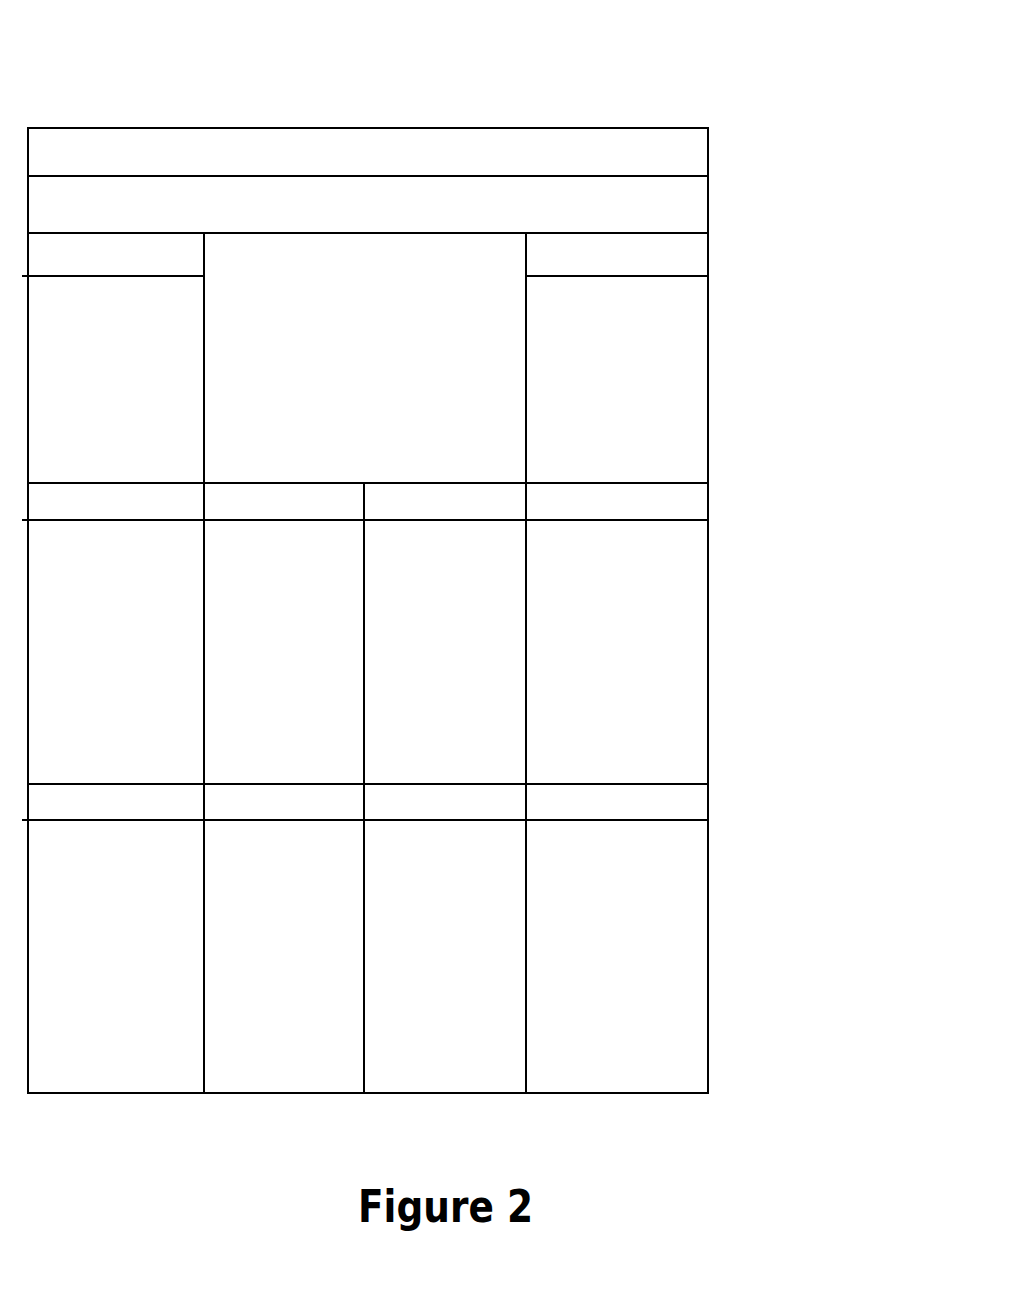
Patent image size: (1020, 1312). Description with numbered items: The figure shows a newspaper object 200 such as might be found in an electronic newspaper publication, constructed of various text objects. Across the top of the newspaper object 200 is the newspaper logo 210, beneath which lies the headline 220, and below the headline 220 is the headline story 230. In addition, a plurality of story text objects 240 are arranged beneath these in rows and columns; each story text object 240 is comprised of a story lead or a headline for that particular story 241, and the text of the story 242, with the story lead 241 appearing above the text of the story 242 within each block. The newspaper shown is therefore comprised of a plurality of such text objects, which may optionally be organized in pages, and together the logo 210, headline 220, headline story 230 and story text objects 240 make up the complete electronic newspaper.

The newspaper object 200 is at (365, 552).
The newspaper logo 210 is at (427, 152).
The headline 220 is at (427, 204).
The headline story 230 is at (494, 358).
The story text objects 240 is at (462, 633).
The story lead 241 is at (663, 504).
The text of the story 242 is at (657, 652).